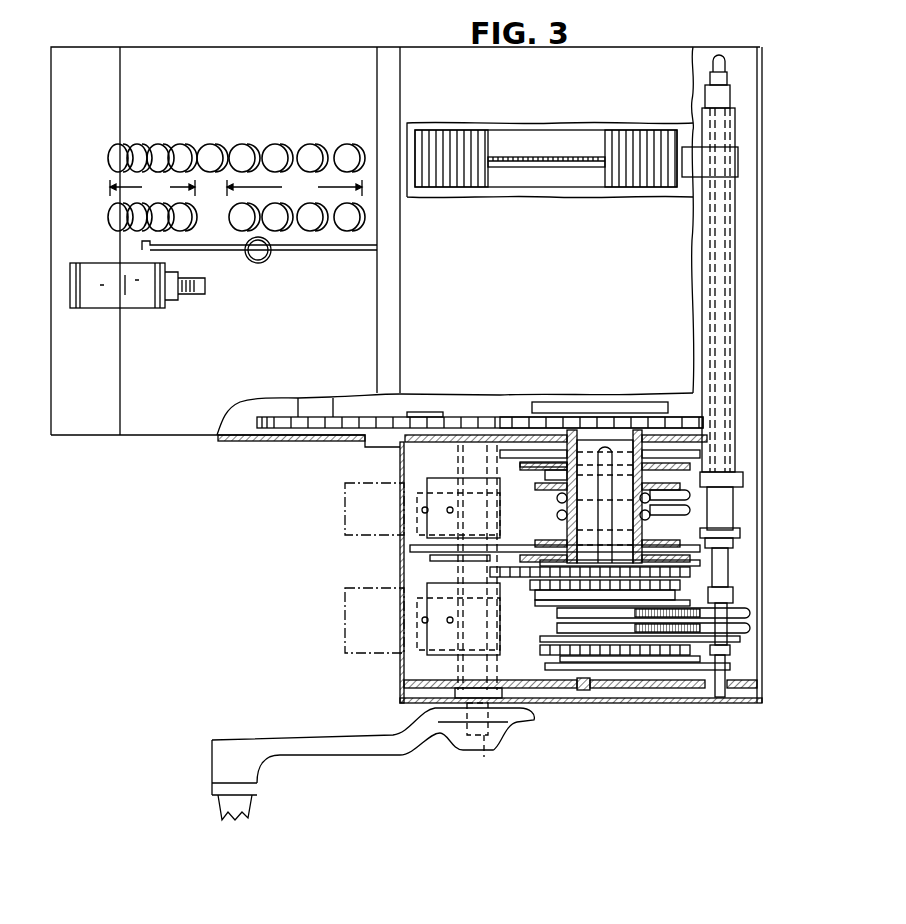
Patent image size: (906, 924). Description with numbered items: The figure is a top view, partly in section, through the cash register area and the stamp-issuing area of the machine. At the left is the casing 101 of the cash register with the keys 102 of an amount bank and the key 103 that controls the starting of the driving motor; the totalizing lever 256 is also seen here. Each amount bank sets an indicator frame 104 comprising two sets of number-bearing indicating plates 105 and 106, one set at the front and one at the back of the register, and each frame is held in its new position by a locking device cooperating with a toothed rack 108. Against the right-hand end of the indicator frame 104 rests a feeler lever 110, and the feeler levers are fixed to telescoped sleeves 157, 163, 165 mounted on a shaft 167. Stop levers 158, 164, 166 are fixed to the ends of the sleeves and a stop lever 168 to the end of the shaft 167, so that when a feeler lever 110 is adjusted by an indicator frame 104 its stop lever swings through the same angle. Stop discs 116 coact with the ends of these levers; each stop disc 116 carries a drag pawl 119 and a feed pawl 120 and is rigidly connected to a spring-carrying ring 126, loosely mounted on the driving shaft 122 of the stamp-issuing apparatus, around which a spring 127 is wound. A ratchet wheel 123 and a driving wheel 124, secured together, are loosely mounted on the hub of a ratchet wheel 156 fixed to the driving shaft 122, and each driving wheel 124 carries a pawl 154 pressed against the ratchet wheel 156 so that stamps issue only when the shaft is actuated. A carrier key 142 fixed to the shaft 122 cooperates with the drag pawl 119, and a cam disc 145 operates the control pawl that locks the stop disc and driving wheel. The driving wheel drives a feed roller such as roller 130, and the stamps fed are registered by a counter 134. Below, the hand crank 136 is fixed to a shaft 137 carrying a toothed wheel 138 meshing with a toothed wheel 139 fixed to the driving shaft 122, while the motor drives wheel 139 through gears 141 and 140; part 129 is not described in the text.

The casing 101 is at (172, 437).
The keys 102 is at (212, 150).
The key 103 is at (118, 300).
The indicator frame 104 is at (536, 130).
The indicating plates 105 is at (455, 132).
The indicating plates 106 is at (625, 132).
The toothed rack 108 is at (541, 160).
The feeler lever 110 is at (738, 160).
The stop disc 116 is at (773, 462).
The drag pawl 119 is at (610, 592).
The feed pawl 120 is at (605, 690).
The driving shaft 122 is at (597, 440).
The ratchet wheel 123 is at (674, 464).
The driving wheel 124 is at (680, 464).
The spring-carrying ring 126 is at (560, 467).
The spring 127 is at (562, 517).
The bar 129 is at (485, 556).
The feed roller 130 is at (435, 518).
The counter 134 is at (425, 608).
The hand crank 136 is at (358, 752).
The shaft 137 is at (486, 758).
The toothed wheel 138 is at (457, 420).
The toothed wheel 139 is at (548, 425).
The gear 140 is at (388, 417).
The gear 141 is at (282, 426).
The carrier key 142 is at (605, 460).
The cam disc 145 is at (650, 408).
The pawl 154 is at (690, 562).
The ratchet wheel 156 is at (650, 690).
The sleeve 157 is at (737, 130).
The stop lever 158 is at (745, 478).
The sleeve 163 is at (730, 97).
The stop lever 164 is at (742, 533).
The sleeve 165 is at (727, 78).
The stop lever 166 is at (745, 597).
The shaft 167 is at (725, 63).
The stop lever 168 is at (740, 645).
The totalizing lever 256 is at (262, 259).